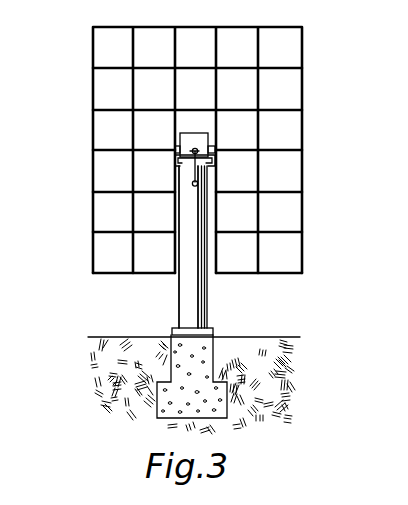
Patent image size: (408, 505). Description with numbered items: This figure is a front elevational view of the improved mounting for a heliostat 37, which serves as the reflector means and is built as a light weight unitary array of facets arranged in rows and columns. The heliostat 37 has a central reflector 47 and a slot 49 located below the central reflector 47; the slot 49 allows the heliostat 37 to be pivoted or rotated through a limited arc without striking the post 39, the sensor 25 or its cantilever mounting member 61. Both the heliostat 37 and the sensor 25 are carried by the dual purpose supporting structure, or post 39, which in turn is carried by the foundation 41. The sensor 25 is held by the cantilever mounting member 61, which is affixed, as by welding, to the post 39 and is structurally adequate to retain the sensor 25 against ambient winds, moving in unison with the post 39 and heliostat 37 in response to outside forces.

The heliostat 37 is at (302, 53).
The sensor 25 is at (198, 150).
The central reflector 47 is at (191, 140).
The cantilever mounting member 61 is at (173, 172).
The slot 49 is at (176, 272).
The post 39 is at (208, 292).
The foundation 41 is at (162, 398).